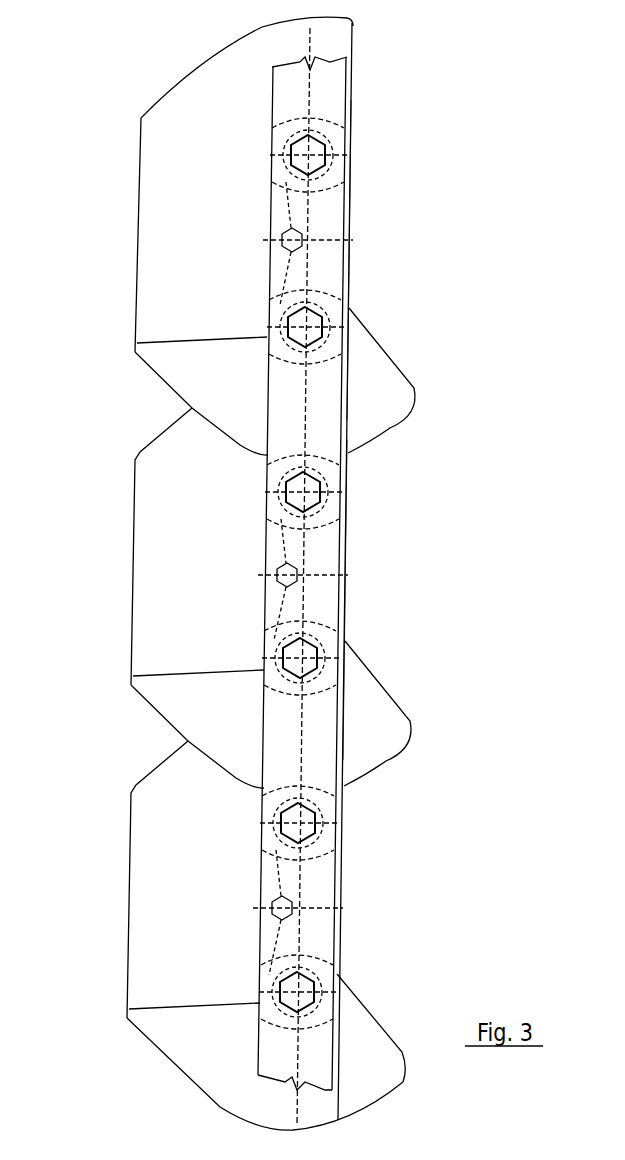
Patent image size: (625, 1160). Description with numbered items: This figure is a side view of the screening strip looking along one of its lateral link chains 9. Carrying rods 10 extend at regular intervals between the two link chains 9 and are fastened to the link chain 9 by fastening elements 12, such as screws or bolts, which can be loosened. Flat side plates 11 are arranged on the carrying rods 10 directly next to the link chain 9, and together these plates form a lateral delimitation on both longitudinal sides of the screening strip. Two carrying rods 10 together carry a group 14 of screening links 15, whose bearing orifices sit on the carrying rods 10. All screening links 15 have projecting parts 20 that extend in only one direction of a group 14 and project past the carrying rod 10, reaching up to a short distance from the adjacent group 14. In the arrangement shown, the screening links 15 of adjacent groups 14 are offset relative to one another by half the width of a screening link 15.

The link chain 9 is at (320, 752).
The carrying rod 10 is at (313, 972).
The flat side plate 11 is at (158, 601).
The fastening element 12 is at (316, 975).
The group of screening links 14 is at (463, 430).
The screening link 15 is at (367, 259).
The projecting part 20 is at (377, 380).